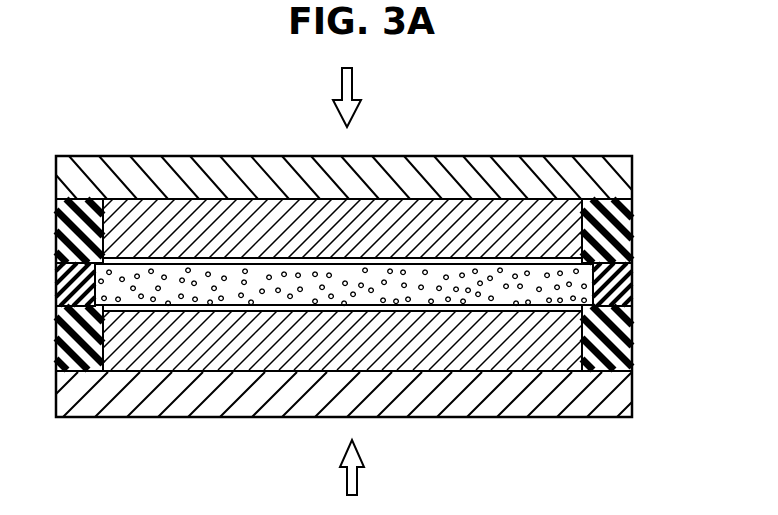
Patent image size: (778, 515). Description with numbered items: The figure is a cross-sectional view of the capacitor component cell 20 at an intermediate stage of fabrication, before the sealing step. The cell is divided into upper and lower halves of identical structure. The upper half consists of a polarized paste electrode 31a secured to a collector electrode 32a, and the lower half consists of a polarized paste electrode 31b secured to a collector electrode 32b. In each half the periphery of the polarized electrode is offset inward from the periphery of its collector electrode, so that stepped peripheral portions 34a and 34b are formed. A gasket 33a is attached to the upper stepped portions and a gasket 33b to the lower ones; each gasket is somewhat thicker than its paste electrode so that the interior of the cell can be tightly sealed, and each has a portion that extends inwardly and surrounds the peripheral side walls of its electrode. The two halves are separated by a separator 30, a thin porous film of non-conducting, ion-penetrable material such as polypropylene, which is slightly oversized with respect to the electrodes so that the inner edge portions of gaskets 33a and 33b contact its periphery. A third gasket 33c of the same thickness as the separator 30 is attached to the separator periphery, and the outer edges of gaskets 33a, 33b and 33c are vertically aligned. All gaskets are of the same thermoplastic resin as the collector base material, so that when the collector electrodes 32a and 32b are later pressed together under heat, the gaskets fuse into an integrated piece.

The capacitor component cell 20 is at (450, 97).
The separator 30 is at (179, 283).
The polarized paste electrode 31a is at (270, 242).
The polarized paste electrode 31b is at (260, 335).
The collector electrode 32a is at (469, 161).
The collector electrode 32b is at (473, 398).
The gasket 33a is at (625, 228).
The gasket 33b is at (625, 333).
The third gasket 33c is at (625, 283).
The stepped peripheral portion 34a is at (598, 197).
The stepped peripheral portion 34b is at (603, 369).